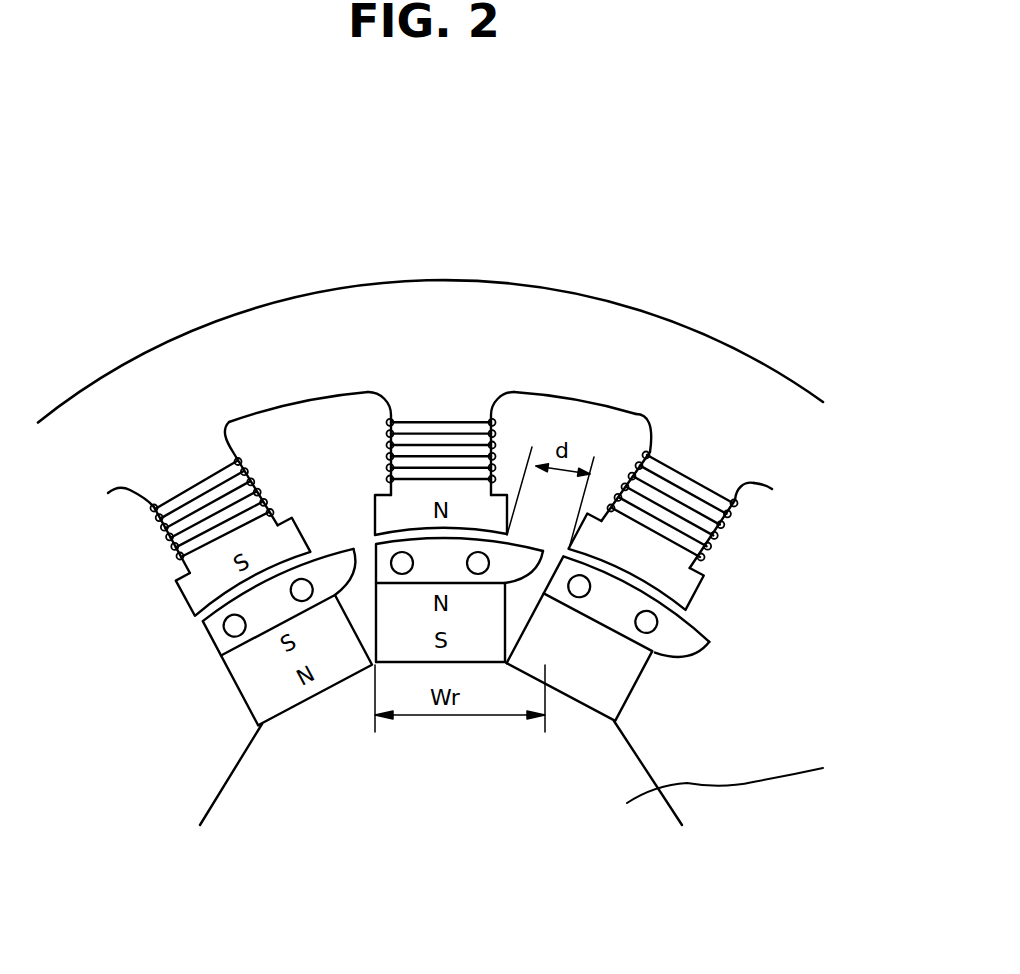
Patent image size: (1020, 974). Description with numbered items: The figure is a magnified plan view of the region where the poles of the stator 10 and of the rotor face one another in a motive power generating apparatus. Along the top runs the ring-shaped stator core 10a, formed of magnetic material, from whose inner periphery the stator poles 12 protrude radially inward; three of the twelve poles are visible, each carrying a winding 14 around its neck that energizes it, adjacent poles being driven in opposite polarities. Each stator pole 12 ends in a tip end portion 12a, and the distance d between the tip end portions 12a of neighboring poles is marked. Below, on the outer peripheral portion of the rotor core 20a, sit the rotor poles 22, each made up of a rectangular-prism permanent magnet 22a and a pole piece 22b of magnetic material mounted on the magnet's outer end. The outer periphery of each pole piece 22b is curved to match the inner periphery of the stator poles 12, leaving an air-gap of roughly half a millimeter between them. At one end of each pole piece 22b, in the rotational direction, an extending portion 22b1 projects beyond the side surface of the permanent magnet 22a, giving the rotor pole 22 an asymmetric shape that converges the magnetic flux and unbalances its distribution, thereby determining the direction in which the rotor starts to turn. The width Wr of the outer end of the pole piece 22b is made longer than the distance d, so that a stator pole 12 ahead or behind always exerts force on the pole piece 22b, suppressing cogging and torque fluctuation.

The stator 10 is at (602, 287).
The stator core 10a is at (662, 383).
The stator pole 12 is at (739, 512).
The tip end portion 12a is at (683, 594).
The winding 14 is at (722, 557).
The rotor core 20a is at (748, 773).
The rotor pole 22 is at (693, 649).
The permanent magnet 22a is at (612, 708).
The pole piece 22b is at (627, 637).
The extending portion 22b1 is at (708, 645).